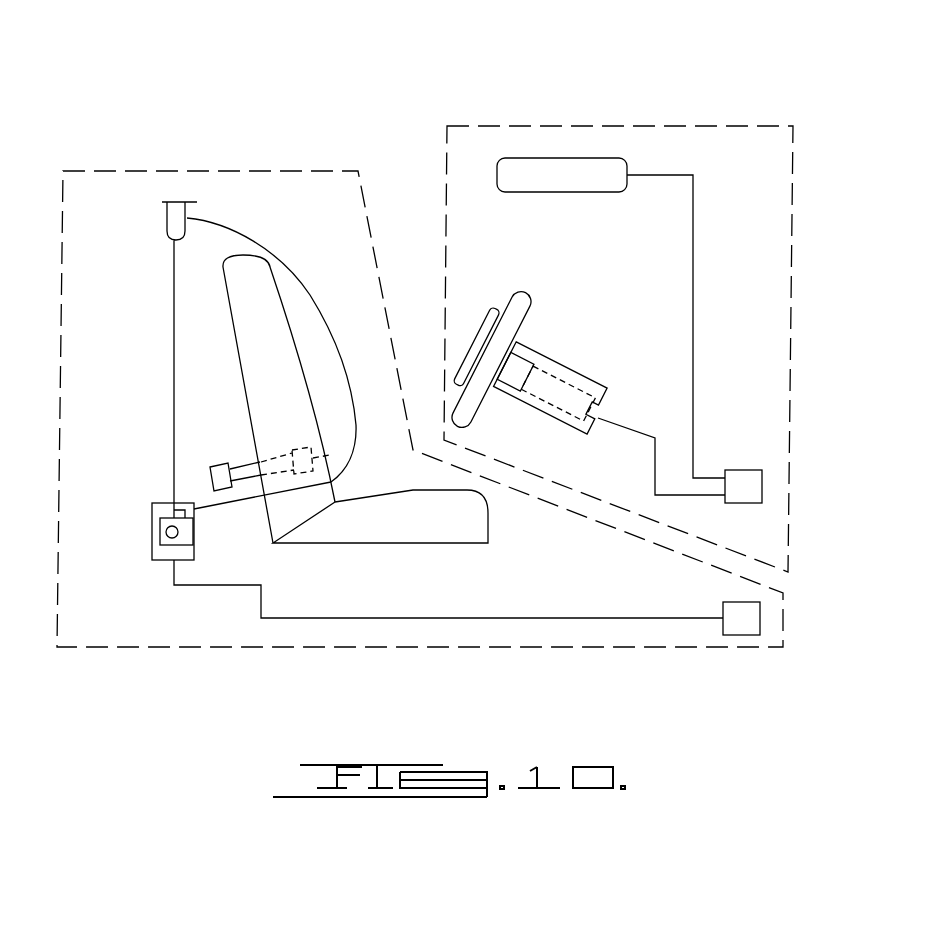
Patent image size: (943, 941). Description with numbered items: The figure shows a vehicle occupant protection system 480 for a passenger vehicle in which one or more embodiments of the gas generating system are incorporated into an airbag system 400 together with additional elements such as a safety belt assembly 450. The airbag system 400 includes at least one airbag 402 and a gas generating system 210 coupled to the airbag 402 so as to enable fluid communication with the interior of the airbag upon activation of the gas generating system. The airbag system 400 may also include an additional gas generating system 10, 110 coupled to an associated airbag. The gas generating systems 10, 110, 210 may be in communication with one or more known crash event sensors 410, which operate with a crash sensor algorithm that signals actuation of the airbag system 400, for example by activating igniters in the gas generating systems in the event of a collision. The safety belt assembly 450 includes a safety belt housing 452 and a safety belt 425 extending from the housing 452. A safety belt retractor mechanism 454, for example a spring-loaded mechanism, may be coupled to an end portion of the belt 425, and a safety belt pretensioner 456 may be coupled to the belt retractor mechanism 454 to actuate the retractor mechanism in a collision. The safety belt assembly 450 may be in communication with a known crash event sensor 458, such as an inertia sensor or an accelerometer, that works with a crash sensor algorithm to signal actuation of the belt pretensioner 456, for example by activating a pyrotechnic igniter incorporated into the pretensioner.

The vehicle occupant protection system 480 is at (297, 104).
The safety belt assembly 450 is at (355, 650).
The airbag system 400 is at (647, 126).
The gas generating system 10 is at (599, 275).
The gas generating system 110 is at (527, 170).
The safety belt 425 is at (293, 262).
The airbag 402 is at (475, 335).
The gas generating system 210 is at (535, 340).
The crash event sensor 410 is at (742, 477).
The crash event sensor 458 is at (730, 605).
The safety belt retractor mechanism 454 is at (158, 503).
The safety belt housing 452 is at (160, 535).
The safety belt pretensioner 456 is at (160, 560).